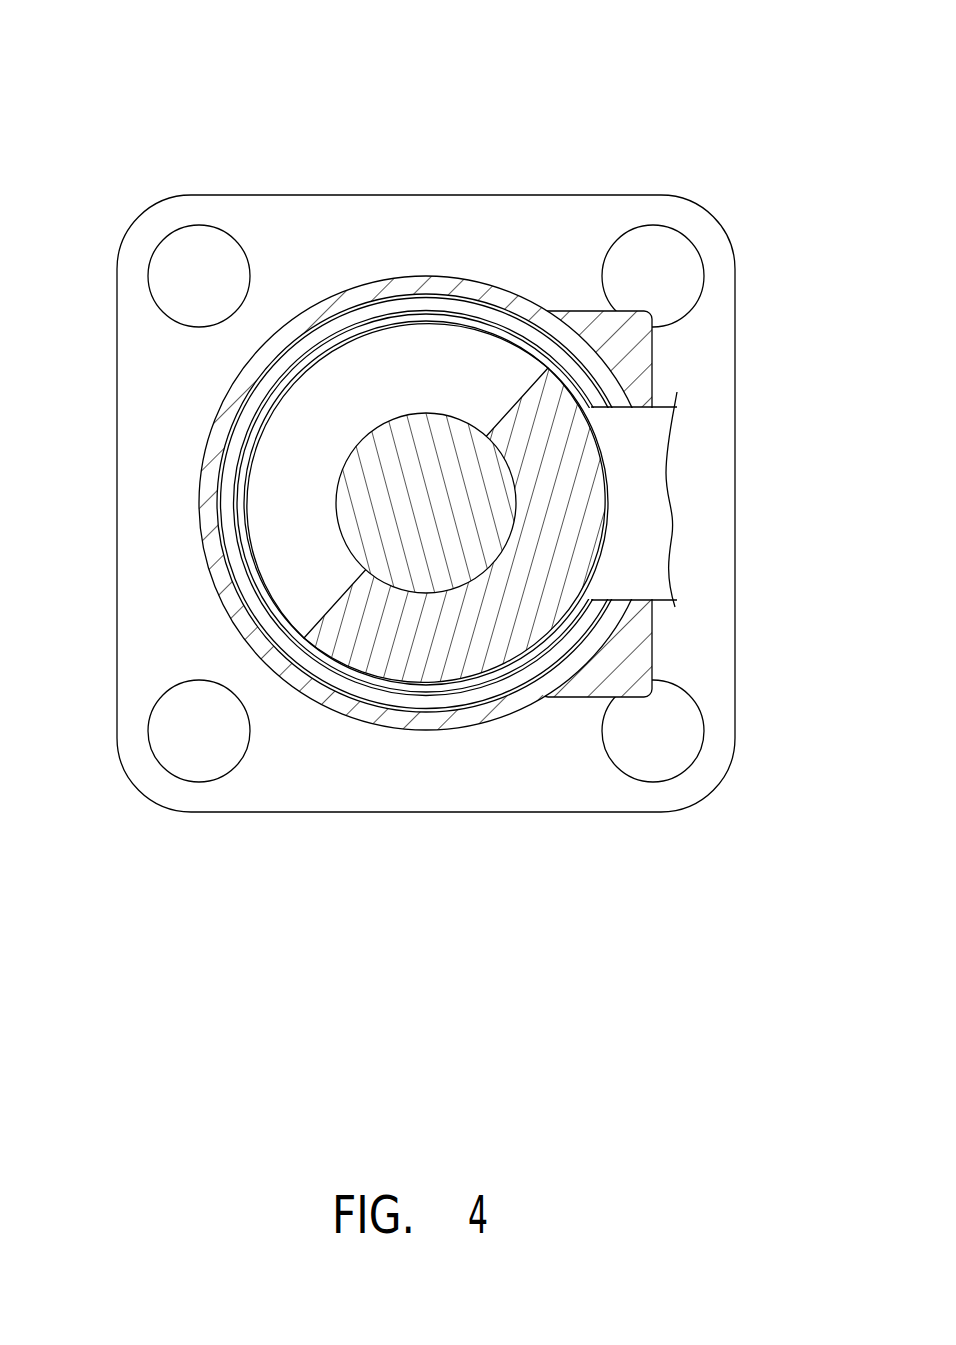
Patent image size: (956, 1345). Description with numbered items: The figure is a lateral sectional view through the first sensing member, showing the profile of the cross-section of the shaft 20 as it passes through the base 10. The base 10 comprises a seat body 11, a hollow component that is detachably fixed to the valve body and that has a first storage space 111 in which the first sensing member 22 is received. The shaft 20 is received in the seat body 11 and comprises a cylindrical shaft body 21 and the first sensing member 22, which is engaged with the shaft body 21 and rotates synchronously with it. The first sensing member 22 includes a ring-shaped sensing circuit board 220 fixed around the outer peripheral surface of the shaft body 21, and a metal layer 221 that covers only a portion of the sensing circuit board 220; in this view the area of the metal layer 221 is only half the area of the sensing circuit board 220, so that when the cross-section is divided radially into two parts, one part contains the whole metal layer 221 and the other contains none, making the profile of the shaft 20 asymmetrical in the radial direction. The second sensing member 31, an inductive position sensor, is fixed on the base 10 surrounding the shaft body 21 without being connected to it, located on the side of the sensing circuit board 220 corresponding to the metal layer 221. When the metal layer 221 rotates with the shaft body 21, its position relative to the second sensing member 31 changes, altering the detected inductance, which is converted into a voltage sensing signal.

The base 10 is at (397, 511).
The seat body 11 is at (217, 440).
The first storage space 111 is at (347, 315).
The shaft 20 is at (426, 664).
The shaft body 21 is at (432, 560).
The first sensing member 22 is at (426, 633).
The sensing circuit board 220 is at (296, 588).
The metal layer 221 is at (365, 635).
The second sensing member 31 is at (545, 658).